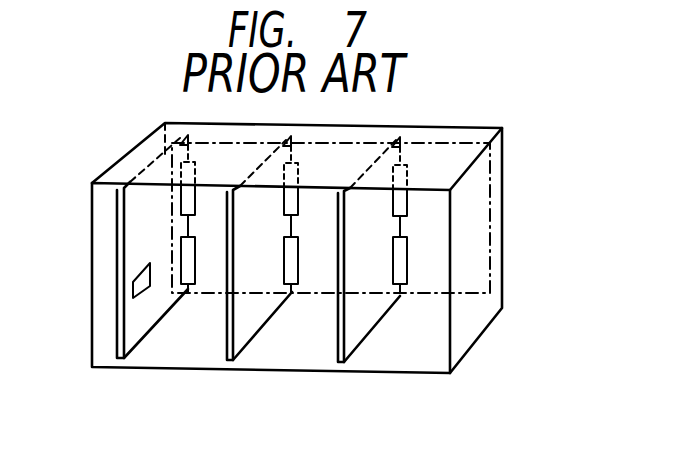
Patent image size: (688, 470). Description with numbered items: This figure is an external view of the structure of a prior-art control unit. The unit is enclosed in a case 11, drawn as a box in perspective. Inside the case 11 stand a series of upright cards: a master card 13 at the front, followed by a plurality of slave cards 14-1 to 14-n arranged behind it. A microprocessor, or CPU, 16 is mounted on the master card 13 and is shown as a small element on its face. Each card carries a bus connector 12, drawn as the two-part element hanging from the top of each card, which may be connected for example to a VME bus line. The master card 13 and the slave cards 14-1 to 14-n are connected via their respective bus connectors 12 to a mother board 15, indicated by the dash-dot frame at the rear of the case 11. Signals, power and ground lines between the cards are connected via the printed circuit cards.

The case 11 is at (502, 127).
The bus connector 12 is at (405, 265).
The master card 13 is at (148, 326).
The slave card 14-1 is at (251, 328).
The slave card 14-n is at (366, 320).
The mother board 15 is at (490, 273).
The microprocessor (CPU) 16 is at (146, 262).